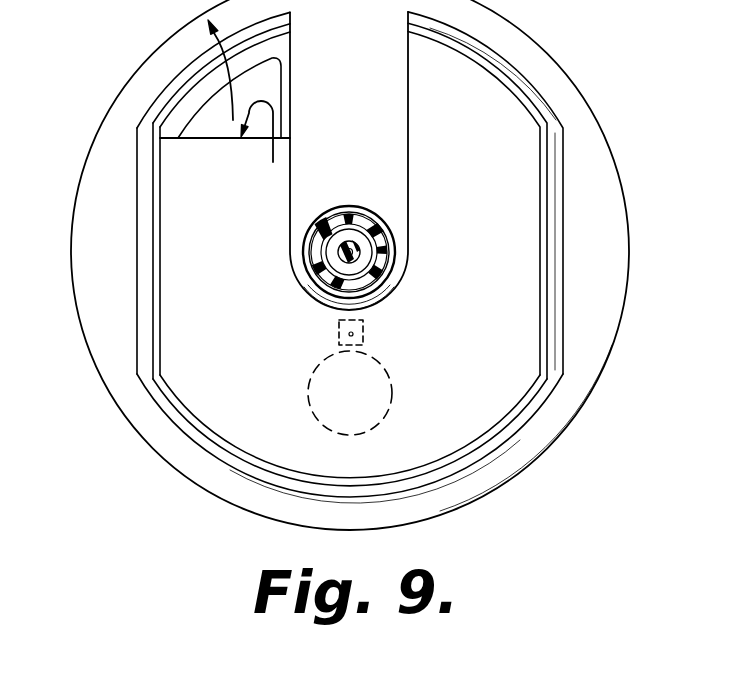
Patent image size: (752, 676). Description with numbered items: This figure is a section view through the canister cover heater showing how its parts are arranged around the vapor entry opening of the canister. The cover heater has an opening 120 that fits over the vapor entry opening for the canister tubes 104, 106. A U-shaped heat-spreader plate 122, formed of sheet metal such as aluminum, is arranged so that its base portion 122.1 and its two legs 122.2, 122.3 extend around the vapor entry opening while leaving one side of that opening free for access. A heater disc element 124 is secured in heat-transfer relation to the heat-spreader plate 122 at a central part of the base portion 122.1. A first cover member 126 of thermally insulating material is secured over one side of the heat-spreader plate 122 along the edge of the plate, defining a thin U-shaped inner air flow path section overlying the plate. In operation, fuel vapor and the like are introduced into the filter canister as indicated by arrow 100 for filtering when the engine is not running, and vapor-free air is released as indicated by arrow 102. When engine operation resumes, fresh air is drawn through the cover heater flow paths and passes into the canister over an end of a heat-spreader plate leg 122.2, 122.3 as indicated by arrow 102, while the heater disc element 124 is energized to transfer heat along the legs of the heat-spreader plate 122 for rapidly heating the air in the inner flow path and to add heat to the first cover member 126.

The arrow 100 is at (273, 162).
The arrow 102 is at (217, 53).
The canister tube 104 is at (338, 258).
The canister tube 106 is at (383, 245).
The opening 120 is at (377, 278).
The heat-spreader plate 122 is at (497, 352).
The base portion 122.1 is at (335, 457).
The leg 122.2 is at (173, 175).
The leg 122.3 is at (503, 128).
The heater disc element 124 is at (400, 404).
The first cover member 126 is at (165, 87).